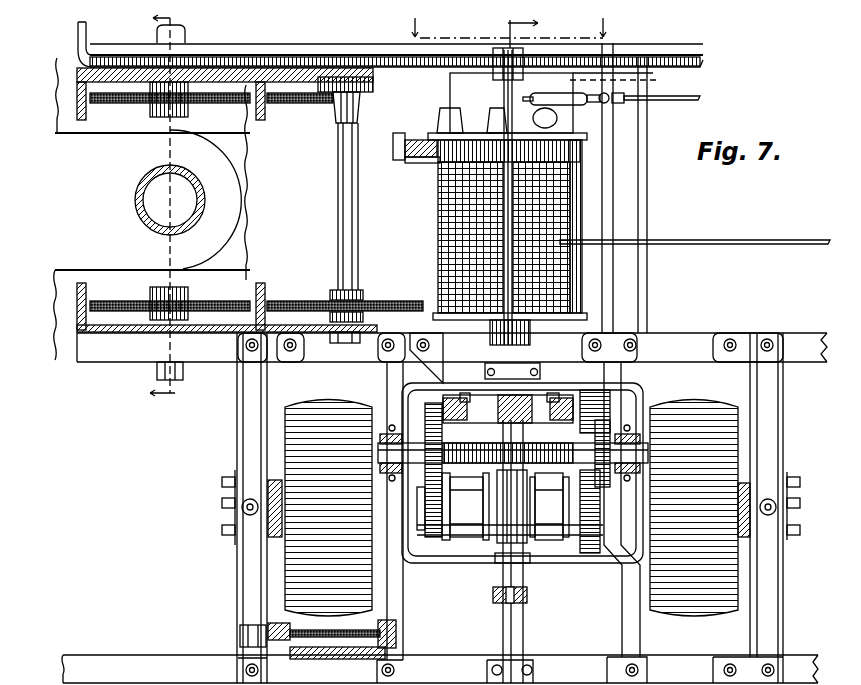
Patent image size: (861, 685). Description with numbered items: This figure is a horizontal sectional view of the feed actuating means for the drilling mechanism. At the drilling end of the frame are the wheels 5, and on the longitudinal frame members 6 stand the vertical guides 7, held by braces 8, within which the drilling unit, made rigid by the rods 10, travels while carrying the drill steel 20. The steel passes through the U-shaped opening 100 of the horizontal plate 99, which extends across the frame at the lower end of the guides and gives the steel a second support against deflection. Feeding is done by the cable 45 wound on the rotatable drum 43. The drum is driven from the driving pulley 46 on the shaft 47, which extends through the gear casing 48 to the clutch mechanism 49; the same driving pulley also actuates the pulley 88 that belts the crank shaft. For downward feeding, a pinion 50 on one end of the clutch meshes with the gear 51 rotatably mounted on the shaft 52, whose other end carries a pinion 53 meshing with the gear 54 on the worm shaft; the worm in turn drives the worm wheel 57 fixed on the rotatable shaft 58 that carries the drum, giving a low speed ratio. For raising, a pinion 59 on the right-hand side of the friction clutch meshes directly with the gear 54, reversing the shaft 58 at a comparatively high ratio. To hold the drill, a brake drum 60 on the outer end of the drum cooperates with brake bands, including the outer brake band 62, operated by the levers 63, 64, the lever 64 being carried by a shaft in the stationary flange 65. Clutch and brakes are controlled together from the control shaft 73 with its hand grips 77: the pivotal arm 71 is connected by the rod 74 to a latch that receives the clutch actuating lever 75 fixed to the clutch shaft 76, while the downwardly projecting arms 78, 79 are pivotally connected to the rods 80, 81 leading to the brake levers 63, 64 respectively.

The wheels 5 is at (156, 209).
The longitudinal frame members 6 is at (115, 50).
The vertical guides 7 is at (267, 116).
The braces 8 is at (511, 30).
The rods 10 is at (507, 32).
The drill steel 20 is at (137, 217).
The rotatable drum 43 is at (447, 195).
The cable 45 is at (683, 97).
The driving pulley 46 is at (715, 518).
The shaft 47 is at (650, 522).
The gear casing 48 is at (447, 550).
The clutch mechanism 49 is at (550, 528).
The pinion 50 is at (433, 528).
The gear 51 is at (470, 447).
The shaft 52 is at (468, 440).
The pinion 53 is at (604, 406).
The gear 54 is at (637, 360).
The worm wheel 57 is at (565, 398).
The rotatable shaft 58 is at (520, 385).
The pinion 59 is at (600, 498).
The brake drum 60 is at (575, 127).
The outer brake band 62 is at (575, 148).
The lever 63 is at (624, 97).
The lever 64 is at (440, 134).
The stationary flange 65 is at (456, 87).
The pivotal arm 71 is at (523, 53).
The shaft 73 is at (220, 58).
The rod 74 is at (507, 177).
The clutch actuating lever 75 is at (498, 597).
The clutch shaft 76 is at (512, 632).
The hand grips 77 is at (80, 56).
The arm 78 is at (522, 113).
The arm 79 is at (437, 163).
The rod 80 is at (602, 93).
The rod 81 is at (420, 153).
The pulley 88 is at (295, 437).
The horizontal plate 99 is at (107, 123).
The U-shaped opening 100 is at (60, 270).